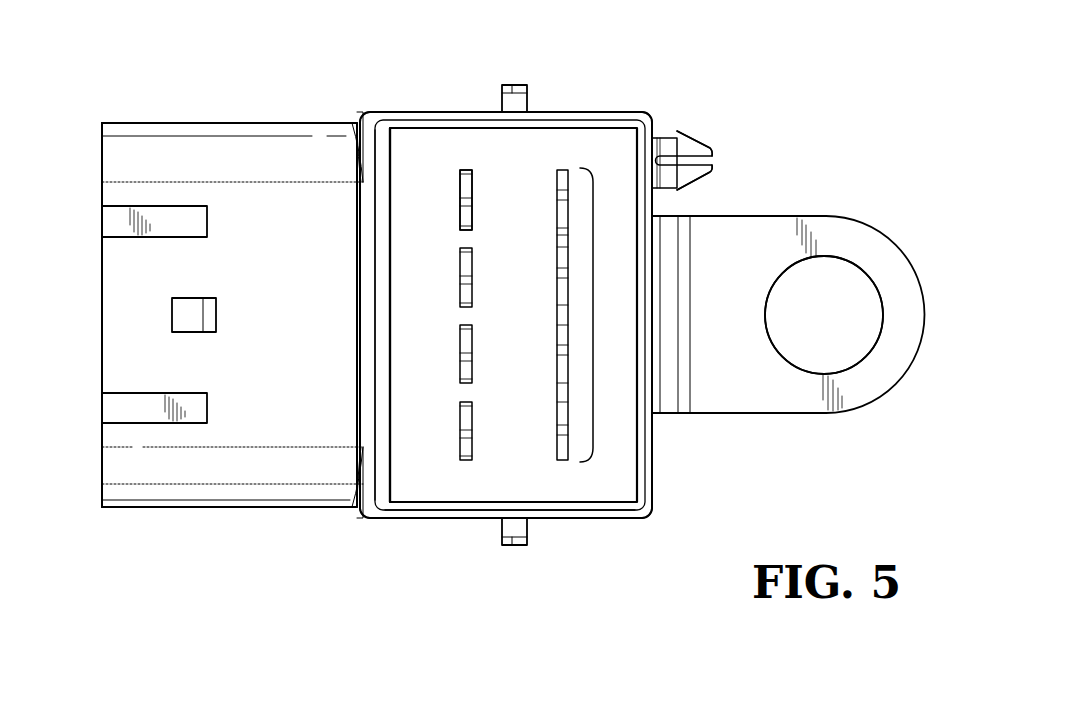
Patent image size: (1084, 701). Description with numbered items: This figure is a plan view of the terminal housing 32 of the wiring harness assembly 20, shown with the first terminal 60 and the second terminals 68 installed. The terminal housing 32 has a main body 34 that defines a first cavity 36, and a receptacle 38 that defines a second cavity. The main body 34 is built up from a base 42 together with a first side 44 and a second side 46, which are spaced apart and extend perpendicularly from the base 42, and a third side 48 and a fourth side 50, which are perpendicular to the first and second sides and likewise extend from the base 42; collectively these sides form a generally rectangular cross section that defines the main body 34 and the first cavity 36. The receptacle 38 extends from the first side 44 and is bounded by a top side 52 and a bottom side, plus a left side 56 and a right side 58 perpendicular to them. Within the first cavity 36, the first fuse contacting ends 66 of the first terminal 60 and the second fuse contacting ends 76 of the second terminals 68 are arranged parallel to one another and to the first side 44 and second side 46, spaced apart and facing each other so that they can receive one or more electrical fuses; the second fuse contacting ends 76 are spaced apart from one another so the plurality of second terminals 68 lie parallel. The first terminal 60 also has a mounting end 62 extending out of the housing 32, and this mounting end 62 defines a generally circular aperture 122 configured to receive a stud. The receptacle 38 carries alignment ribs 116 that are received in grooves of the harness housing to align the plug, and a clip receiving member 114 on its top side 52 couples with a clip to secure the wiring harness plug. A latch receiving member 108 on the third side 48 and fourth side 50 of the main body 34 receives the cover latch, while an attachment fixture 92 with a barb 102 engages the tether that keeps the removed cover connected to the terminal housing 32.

The wiring harness assembly 20 is at (125, 542).
The terminal housing 32 is at (715, 84).
The main body 34 is at (640, 510).
The first cavity 36 is at (517, 184).
The receptacle 38 is at (130, 306).
The base 42 is at (535, 450).
The first side 44 is at (375, 330).
The second side 46 is at (655, 350).
The third side 48 is at (442, 110).
The fourth side 50 is at (440, 512).
The top side 52 is at (260, 215).
The left side 56 is at (285, 122).
The right side 58 is at (170, 507).
The first terminal 60 is at (593, 322).
The mounting end 62 is at (898, 290).
The first fuse contacting end 66 is at (557, 200).
The second terminal 68 is at (460, 200).
The second fuse contacting end 76 is at (466, 200).
The attachment fixture 92 is at (718, 144).
The barb 102 is at (693, 172).
The latch receiving member 108 is at (515, 85).
The clip receiving member 114 is at (196, 312).
The alignment rib 116 is at (192, 228).
The aperture 122 is at (872, 343).